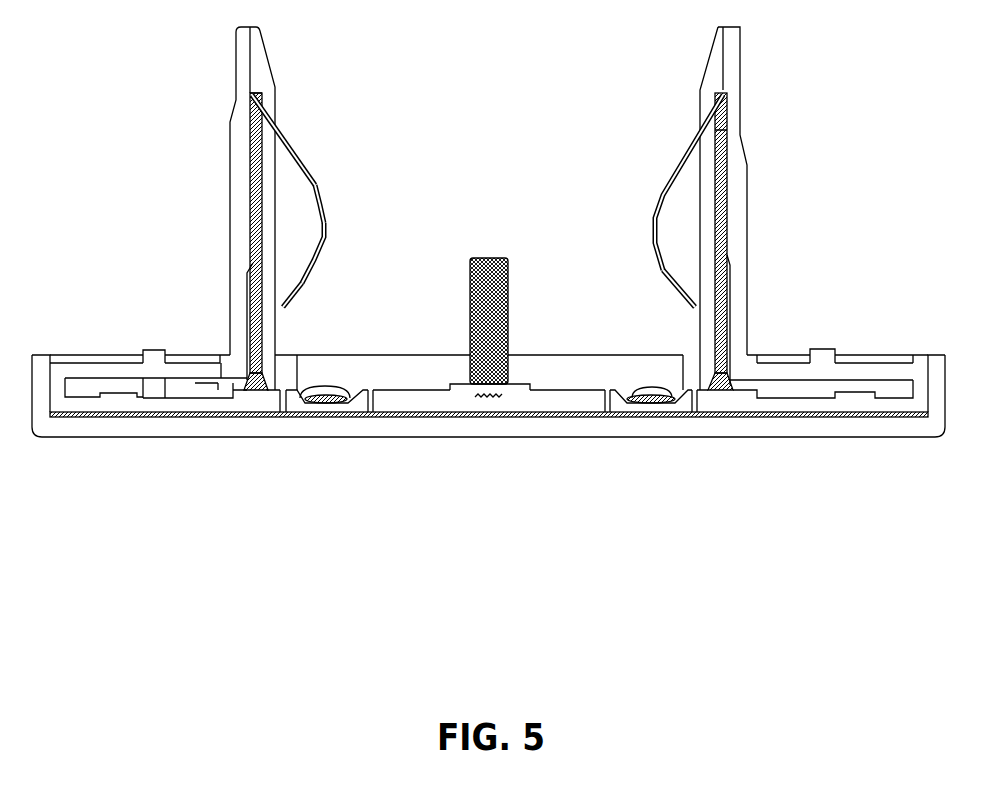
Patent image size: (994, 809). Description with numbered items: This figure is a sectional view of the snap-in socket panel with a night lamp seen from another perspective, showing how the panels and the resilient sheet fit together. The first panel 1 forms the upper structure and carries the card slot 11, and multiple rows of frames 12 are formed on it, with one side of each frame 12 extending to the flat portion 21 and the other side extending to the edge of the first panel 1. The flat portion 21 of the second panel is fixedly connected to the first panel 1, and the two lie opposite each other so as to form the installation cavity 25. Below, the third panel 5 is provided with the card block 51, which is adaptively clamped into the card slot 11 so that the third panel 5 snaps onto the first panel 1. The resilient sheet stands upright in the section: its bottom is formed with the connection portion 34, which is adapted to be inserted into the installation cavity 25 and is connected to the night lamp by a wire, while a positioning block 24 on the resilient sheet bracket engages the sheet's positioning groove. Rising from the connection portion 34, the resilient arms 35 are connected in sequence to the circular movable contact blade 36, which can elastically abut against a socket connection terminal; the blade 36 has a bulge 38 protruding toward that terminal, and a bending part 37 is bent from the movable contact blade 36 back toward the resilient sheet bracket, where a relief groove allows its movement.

The first panel 1 is at (87, 405).
The third panel 5 is at (78, 423).
The card slot 11 is at (283, 392).
The frame 12 is at (247, 327).
The flat portion 21 is at (163, 372).
The positioning block 24 is at (725, 157).
The installation cavity 25 is at (127, 388).
The connection portion 34 is at (212, 380).
The resilient arm 35 is at (278, 132).
The circular movable contact blade 36 is at (317, 203).
The bending part 37 is at (300, 290).
The bulge 38 is at (325, 237).
The card block 51 is at (340, 402).